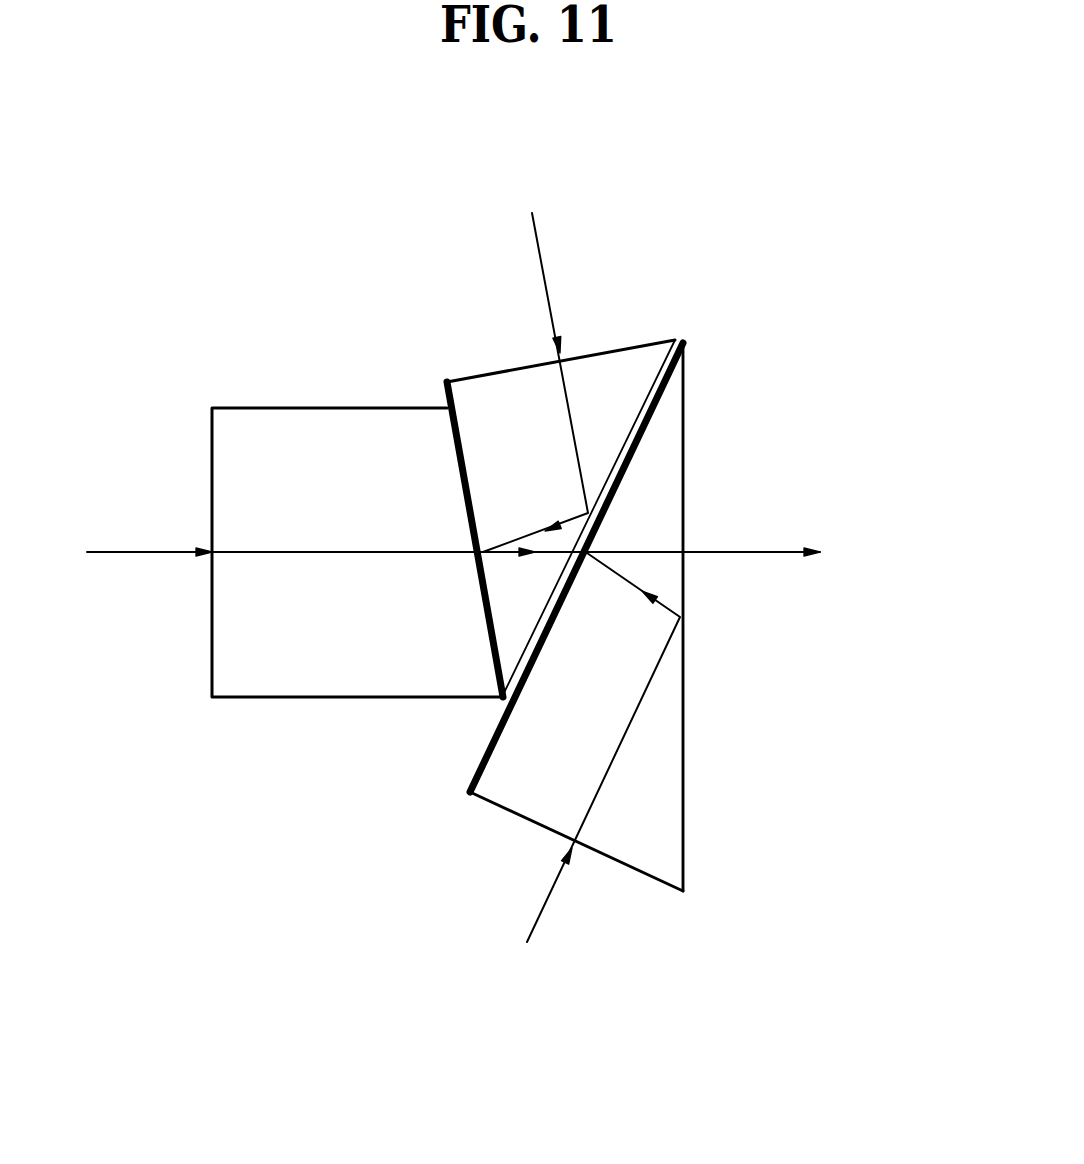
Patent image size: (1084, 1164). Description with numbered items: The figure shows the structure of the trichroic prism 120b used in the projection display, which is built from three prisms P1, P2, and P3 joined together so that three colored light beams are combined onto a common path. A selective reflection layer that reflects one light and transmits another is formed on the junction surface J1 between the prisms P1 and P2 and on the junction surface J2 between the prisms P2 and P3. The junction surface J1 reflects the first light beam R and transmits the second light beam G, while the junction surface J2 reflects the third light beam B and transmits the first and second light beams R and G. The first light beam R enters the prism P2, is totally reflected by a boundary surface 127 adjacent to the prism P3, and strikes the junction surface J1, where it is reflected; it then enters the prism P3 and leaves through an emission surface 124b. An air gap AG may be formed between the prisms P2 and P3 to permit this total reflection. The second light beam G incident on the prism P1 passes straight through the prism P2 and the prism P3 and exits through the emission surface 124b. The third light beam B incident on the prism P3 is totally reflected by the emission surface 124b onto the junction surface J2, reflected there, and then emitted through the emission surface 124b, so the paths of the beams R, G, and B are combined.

The trichroic prism 120b is at (797, 337).
The prism P1 is at (280, 407).
The prism P2 is at (447, 380).
The prism P3 is at (682, 892).
The air gap AG is at (670, 340).
The boundary surface 127 is at (643, 400).
The emission surface 124b is at (683, 433).
The second light beam G is at (437, 554).
The first light beam R is at (535, 382).
The third light beam B is at (591, 747).
The junction surface J1 is at (487, 622).
The junction surface J2 is at (505, 730).